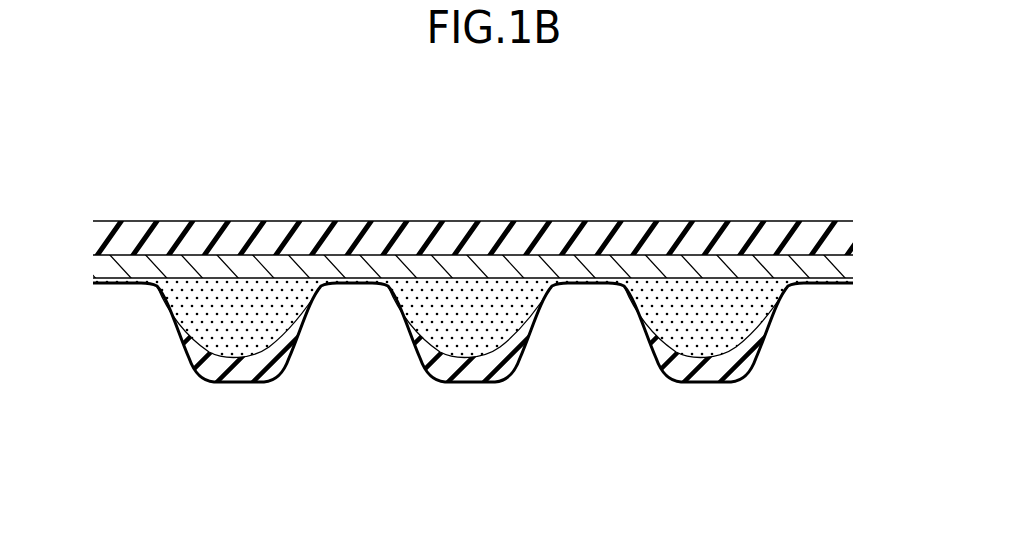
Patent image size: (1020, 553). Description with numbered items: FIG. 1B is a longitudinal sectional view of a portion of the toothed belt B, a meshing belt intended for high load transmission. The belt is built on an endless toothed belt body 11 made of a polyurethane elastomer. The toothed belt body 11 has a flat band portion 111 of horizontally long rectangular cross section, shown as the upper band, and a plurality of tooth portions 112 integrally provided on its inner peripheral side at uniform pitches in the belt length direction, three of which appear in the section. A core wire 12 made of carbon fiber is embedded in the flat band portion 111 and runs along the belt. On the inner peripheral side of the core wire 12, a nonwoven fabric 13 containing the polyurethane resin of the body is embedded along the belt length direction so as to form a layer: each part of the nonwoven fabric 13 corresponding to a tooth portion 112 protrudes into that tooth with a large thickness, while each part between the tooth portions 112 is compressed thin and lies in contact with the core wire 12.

The toothed belt body 11 is at (818, 221).
The flat band portion 111 is at (316, 232).
The tooth portions 112 is at (243, 373).
The core wire 12 is at (693, 263).
The nonwoven fabric 13 is at (728, 331).
The toothed belt B is at (490, 185).